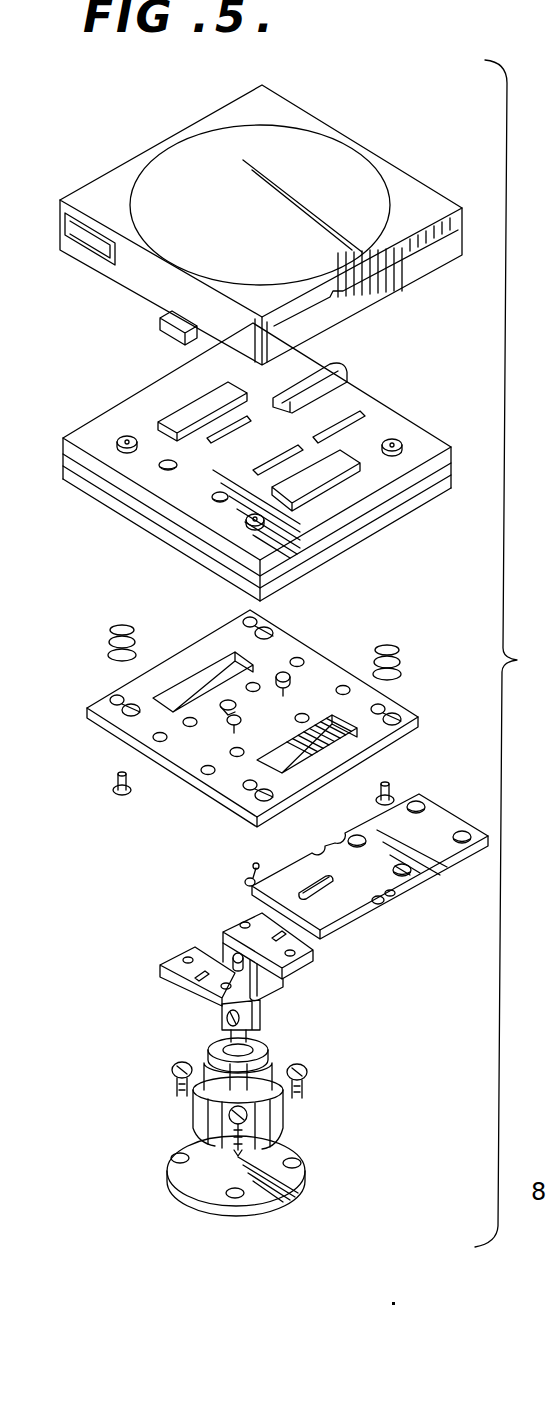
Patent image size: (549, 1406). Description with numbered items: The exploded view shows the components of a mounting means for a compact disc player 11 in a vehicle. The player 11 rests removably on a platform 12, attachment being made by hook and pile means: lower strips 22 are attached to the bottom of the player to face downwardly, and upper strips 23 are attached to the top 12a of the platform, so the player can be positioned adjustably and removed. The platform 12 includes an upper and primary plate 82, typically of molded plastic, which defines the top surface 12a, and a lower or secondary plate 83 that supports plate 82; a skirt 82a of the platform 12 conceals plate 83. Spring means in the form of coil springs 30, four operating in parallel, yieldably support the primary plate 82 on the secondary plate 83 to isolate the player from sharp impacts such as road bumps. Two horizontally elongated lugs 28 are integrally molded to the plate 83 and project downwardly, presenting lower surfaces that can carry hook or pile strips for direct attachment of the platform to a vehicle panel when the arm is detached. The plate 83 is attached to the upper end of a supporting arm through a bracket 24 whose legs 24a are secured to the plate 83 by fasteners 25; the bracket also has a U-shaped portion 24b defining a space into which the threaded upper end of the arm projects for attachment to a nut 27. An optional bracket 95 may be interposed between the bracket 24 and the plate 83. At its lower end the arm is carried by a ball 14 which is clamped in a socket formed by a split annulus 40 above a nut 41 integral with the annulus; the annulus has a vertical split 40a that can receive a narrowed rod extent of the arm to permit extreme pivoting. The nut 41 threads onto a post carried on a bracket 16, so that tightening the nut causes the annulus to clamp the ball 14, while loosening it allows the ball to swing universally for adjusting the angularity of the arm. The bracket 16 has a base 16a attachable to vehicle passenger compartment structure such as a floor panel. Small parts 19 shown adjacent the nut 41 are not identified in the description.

The compact disc player 11 is at (335, 116).
The lower strips 22 is at (160, 323).
The upper strips 23 is at (190, 397).
The top surface 12a is at (357, 397).
The platform 12 is at (259, 462).
The upper primary plate 82 is at (320, 515).
The skirt 82a is at (333, 548).
The horizontally elongated lugs 28 is at (213, 677).
The fasteners 25 is at (280, 668).
The lower secondary plate 83 is at (269, 707).
The coil springs 30 is at (402, 659).
The optional bracket 95 is at (440, 808).
The bracket 24 is at (253, 947).
The nut 27 is at (236, 952).
The legs 24a is at (307, 958).
The U-shaped portion 24b is at (277, 993).
The ball 14 is at (225, 1038).
The split annulus 40 is at (208, 1050).
The vertical split 40a is at (238, 1098).
The nut 41 is at (283, 1117).
The screws 19 is at (308, 1072).
The bracket 16 is at (185, 1206).
The base 16a is at (215, 1185).